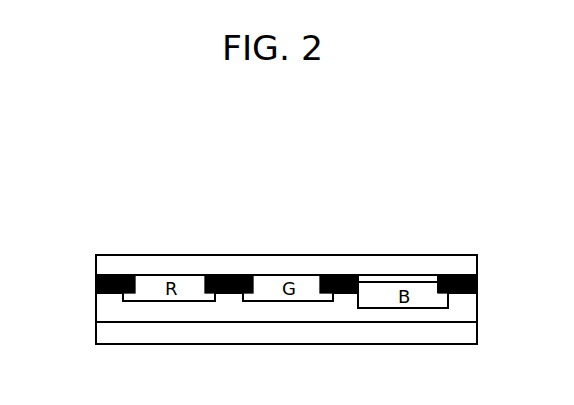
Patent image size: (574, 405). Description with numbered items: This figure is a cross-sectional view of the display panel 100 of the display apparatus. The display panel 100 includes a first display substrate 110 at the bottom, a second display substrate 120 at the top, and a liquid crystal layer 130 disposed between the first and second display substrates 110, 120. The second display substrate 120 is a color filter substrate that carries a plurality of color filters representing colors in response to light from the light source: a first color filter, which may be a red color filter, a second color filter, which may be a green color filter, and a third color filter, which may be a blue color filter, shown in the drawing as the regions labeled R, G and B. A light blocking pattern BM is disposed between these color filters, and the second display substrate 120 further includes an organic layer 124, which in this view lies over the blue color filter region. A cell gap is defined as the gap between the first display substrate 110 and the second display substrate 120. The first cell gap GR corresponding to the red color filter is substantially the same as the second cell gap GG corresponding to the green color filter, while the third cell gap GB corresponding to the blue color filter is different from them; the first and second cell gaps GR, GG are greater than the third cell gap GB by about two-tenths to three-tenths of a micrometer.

The display panel 100 is at (113, 206).
The second display substrate 120 is at (96, 263).
The liquid crystal layer 130 is at (96, 300).
The first display substrate 110 is at (96, 331).
The light blocking pattern BM is at (224, 275).
The organic layer 124 is at (398, 276).
The first cell gap GR is at (169, 301).
The second cell gap GG is at (288, 301).
The third cell gap GB is at (402, 308).